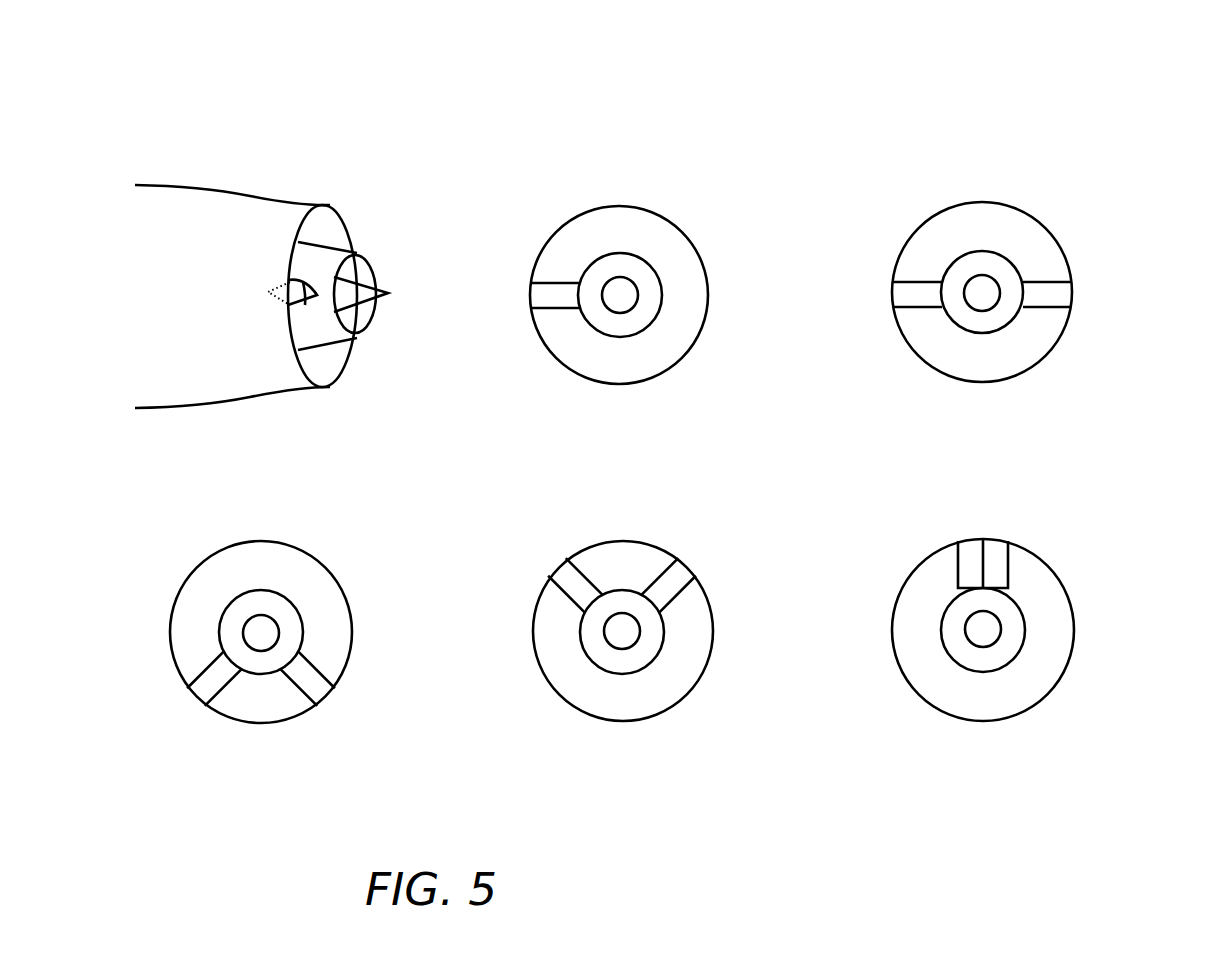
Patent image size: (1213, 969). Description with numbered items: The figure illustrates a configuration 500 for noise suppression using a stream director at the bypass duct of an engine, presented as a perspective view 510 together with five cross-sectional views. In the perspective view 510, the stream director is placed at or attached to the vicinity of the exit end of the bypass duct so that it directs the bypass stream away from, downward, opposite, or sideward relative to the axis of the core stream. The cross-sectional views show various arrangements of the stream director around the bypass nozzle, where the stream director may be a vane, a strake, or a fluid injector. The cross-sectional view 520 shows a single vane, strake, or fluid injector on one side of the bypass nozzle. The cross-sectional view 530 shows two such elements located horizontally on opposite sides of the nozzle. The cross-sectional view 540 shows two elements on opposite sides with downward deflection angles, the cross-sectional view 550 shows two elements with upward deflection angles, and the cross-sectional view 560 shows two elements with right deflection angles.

The configuration 500 is at (1087, 114).
The perspective view 510 is at (252, 330).
The cross-sectional view 520 is at (614, 340).
The cross-sectional view 530 is at (977, 337).
The cross-sectional view 540 is at (255, 675).
The cross-sectional view 550 is at (617, 675).
The cross-sectional view 560 is at (979, 671).